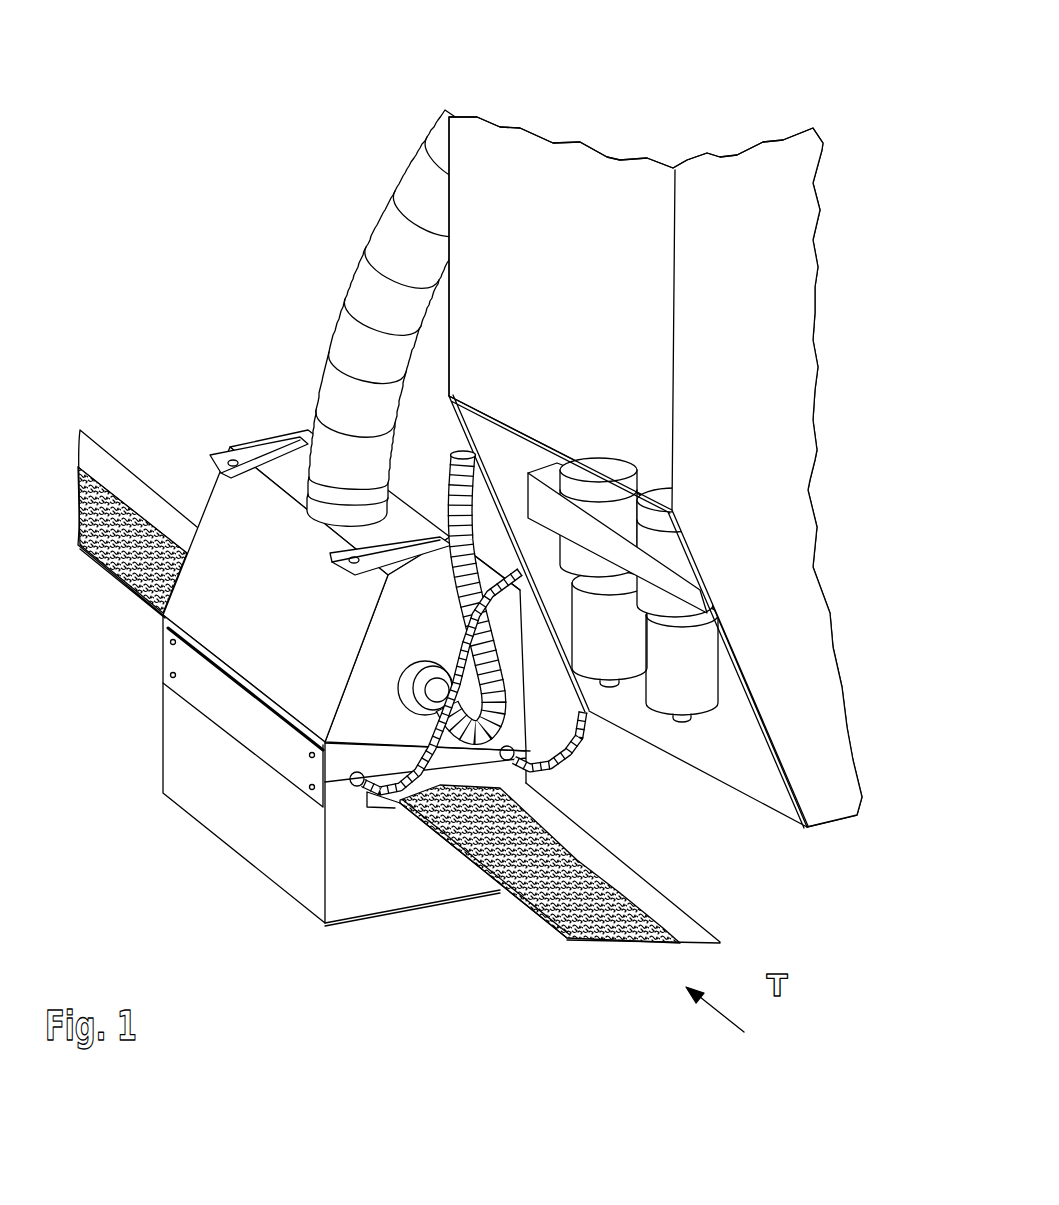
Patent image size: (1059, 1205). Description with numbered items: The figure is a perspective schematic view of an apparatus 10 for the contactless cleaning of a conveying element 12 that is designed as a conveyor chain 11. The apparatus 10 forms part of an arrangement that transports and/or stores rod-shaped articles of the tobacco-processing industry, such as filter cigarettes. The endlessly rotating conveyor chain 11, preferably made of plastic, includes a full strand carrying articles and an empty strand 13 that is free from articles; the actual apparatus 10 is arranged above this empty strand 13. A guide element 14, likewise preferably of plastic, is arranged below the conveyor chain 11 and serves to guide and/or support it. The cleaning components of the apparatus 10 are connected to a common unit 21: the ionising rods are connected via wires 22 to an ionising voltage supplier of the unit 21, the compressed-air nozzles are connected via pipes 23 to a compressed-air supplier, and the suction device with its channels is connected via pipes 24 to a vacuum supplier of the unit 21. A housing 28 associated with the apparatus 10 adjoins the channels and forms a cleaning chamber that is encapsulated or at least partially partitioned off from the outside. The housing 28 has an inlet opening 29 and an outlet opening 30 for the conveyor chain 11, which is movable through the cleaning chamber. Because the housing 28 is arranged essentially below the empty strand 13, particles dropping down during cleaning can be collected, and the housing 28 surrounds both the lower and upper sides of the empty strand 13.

The apparatus 10 is at (282, 372).
The conveyor chain 11 is at (532, 905).
The conveying element 12 is at (572, 958).
The empty strand 13 is at (100, 604).
The guide element 14 is at (667, 908).
The common unit 21 is at (557, 165).
The wires 22 is at (547, 716).
The pipes 23 is at (458, 462).
The pipes 24 is at (387, 238).
The housing 28 is at (190, 800).
The inlet opening 29 is at (487, 778).
The outlet opening 30 is at (137, 622).